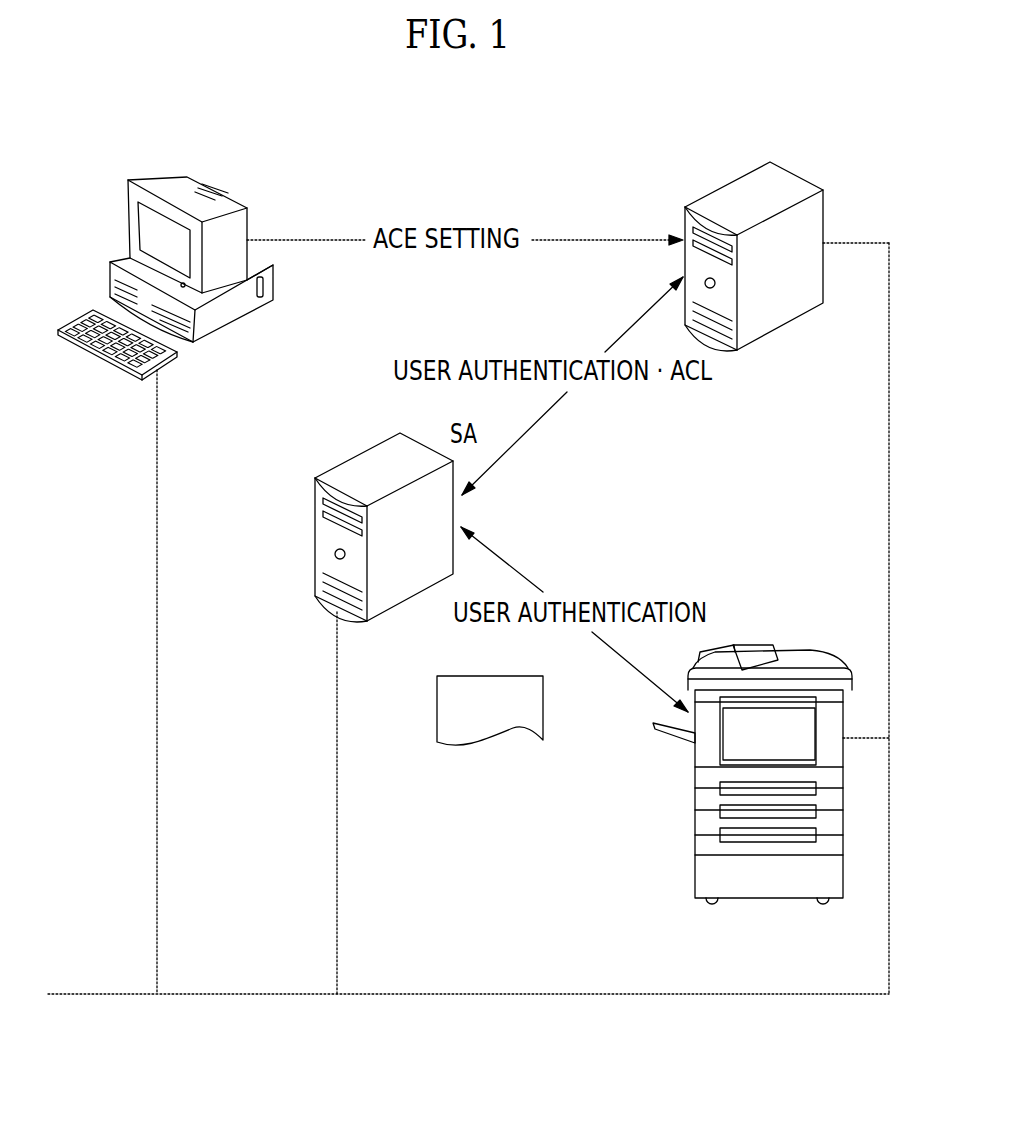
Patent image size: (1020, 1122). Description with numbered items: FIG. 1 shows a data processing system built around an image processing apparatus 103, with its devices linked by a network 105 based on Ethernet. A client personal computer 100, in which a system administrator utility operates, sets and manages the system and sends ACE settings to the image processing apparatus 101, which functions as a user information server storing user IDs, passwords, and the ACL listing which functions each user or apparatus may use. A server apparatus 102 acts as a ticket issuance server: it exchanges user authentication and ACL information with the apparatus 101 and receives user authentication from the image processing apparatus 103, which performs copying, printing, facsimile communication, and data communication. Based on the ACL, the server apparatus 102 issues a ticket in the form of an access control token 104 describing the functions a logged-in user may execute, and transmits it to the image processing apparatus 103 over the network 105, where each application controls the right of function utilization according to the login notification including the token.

The client personal computer 100 is at (223, 193).
The image processing apparatus 101 is at (797, 175).
The server apparatus 102 is at (368, 447).
The image processing apparatus 103 is at (757, 642).
The access control token 104 is at (435, 712).
The network 105 is at (85, 995).